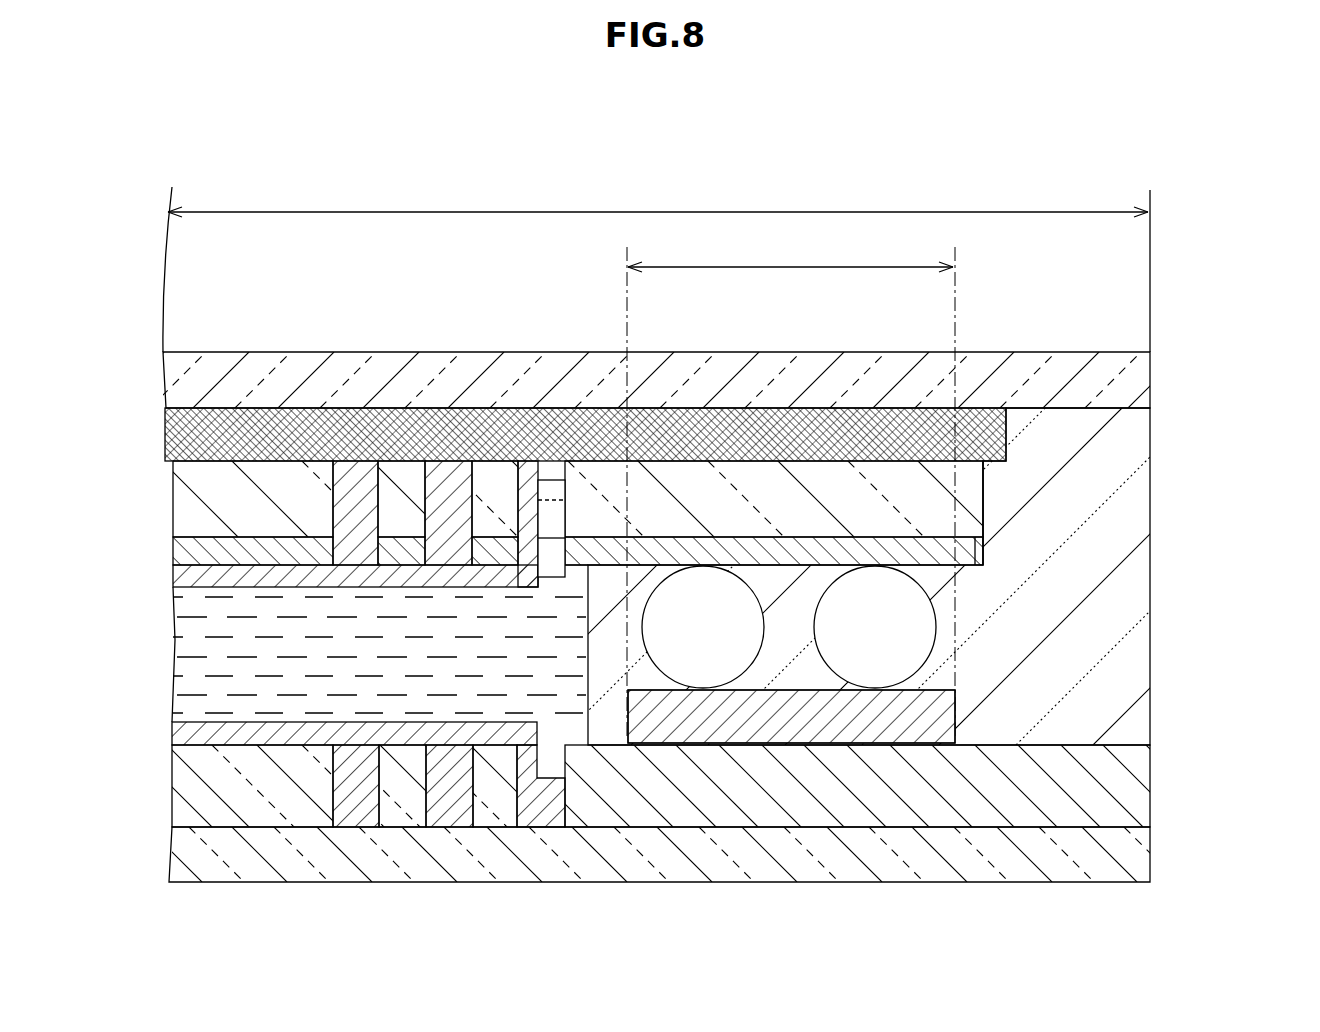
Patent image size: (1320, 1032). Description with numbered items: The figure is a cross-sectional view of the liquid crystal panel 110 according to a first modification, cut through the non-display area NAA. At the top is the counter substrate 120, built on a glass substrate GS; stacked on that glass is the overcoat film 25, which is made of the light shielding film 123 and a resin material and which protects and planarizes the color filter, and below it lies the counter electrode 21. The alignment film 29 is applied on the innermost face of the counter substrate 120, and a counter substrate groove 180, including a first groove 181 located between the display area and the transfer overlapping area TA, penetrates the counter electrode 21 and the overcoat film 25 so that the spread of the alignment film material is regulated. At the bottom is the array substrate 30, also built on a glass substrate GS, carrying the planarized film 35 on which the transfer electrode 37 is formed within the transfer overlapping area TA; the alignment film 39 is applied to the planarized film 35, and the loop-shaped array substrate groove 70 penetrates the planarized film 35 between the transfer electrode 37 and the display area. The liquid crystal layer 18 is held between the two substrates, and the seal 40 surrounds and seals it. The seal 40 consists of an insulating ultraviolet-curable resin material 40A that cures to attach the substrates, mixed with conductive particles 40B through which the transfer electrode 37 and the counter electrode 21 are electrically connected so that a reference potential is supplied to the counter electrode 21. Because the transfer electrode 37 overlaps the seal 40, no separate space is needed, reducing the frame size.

The liquid crystal panel 110 is at (421, 152).
The counter substrate 120 is at (165, 408).
The light shielding film 123 is at (1012, 425).
The alignment film 29 is at (355, 490).
The first groove 181 is at (470, 497).
The counter substrate groove 180 is at (518, 508).
The overcoat film 25 is at (780, 482).
The counter electrode 21 is at (968, 548).
The glass substrate GS is at (1105, 376).
The liquid crystal layer 18 is at (206, 650).
The array substrate 30 is at (171, 693).
The alignment film 39 is at (353, 787).
The array substrate groove 70 is at (520, 793).
The transfer electrode 37 is at (803, 723).
The planarized film 35 is at (935, 805).
The seal 40 is at (1243, 563).
The ultraviolet-curable resin material 40A is at (1123, 592).
The conductive particles 40B is at (920, 641).
The non-display area NAA is at (658, 197).
The transfer overlapping area TA is at (791, 487).